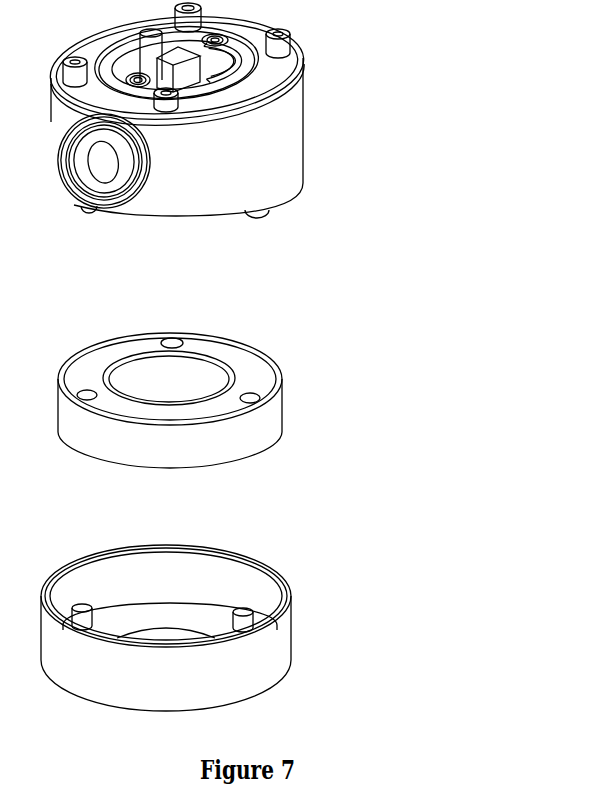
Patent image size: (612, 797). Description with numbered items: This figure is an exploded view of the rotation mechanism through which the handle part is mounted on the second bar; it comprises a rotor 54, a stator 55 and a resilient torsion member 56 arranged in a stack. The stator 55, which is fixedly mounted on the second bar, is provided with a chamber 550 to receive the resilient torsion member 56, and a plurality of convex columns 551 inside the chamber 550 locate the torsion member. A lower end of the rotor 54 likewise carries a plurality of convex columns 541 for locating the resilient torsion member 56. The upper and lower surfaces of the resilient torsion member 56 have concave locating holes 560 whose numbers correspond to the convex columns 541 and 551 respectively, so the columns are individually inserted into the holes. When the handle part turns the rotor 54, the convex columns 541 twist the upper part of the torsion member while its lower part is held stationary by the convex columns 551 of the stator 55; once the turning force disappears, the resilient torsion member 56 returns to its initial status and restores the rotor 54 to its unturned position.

The rotor 54 is at (253, 160).
The convex columns 541 is at (262, 211).
The resilient torsion member 56 is at (243, 437).
The concave locating holes 560 is at (253, 398).
The stator 55 is at (232, 682).
The chamber 550 is at (197, 582).
The convex columns 551 is at (250, 613).